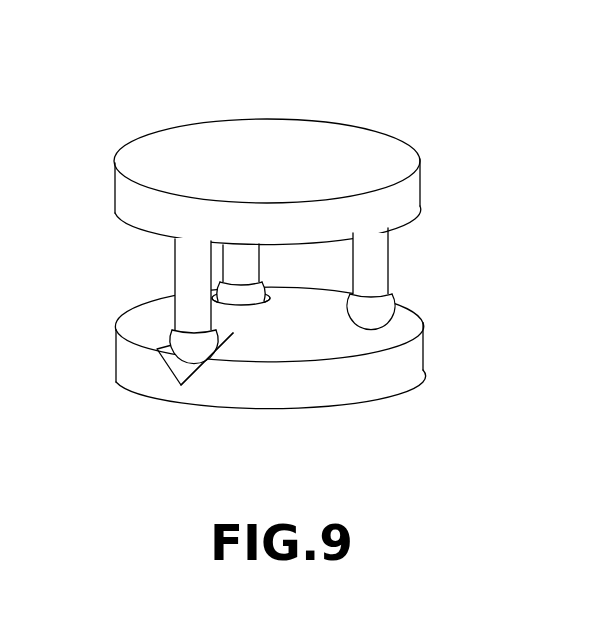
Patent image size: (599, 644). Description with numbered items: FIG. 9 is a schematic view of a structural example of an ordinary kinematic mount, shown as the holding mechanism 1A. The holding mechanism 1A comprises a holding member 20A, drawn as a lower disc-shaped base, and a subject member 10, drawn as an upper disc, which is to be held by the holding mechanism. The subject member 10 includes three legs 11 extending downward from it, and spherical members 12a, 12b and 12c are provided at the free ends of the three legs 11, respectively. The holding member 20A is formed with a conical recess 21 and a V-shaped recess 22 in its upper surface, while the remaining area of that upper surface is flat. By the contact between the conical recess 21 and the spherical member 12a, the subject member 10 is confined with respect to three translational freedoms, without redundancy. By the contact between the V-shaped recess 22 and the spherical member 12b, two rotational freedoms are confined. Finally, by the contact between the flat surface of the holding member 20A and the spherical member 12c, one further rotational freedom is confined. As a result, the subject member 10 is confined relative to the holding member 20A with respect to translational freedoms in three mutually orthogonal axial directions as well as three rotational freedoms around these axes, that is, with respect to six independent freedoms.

The holding mechanism 1A is at (168, 110).
The subject member 10 is at (357, 138).
The legs 11 is at (373, 263).
The spherical member 12a is at (245, 297).
The spherical member 12b is at (172, 343).
The spherical member 12c is at (382, 310).
The holding member 20A is at (397, 378).
The conical recess 21 is at (263, 303).
The V-shaped recess 22 is at (177, 386).